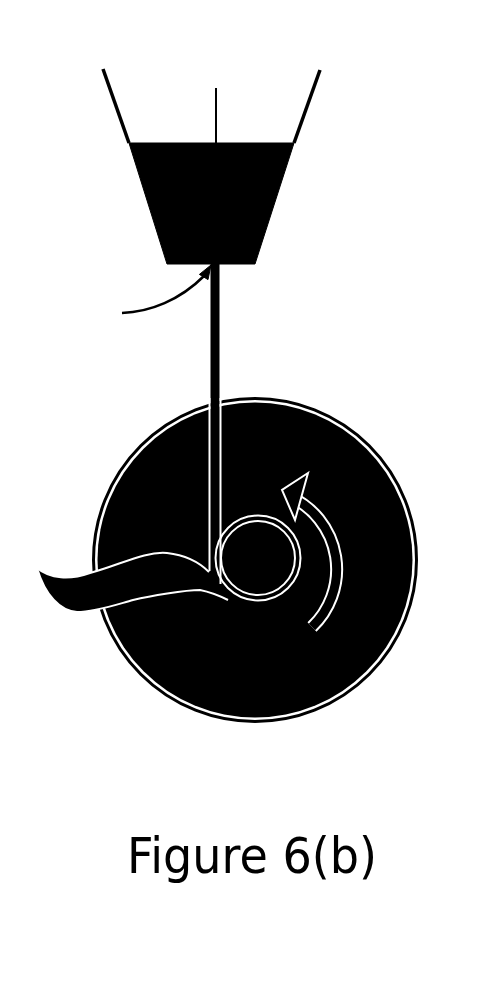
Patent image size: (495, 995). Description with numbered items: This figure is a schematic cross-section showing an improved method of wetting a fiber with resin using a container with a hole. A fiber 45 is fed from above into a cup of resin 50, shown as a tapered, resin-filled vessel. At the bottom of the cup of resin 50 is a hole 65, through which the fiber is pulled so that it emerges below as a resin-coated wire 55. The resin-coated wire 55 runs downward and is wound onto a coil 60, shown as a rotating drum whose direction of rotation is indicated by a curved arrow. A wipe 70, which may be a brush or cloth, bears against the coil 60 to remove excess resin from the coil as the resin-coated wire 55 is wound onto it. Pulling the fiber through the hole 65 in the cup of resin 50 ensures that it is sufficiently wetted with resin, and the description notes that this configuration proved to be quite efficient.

The fiber 45 is at (242, 93).
The cup of resin 50 is at (205, 166).
The resin-coated wire 55 is at (244, 423).
The coil 60 is at (384, 544).
The hole 65 is at (141, 301).
The wipe 70 is at (120, 601).